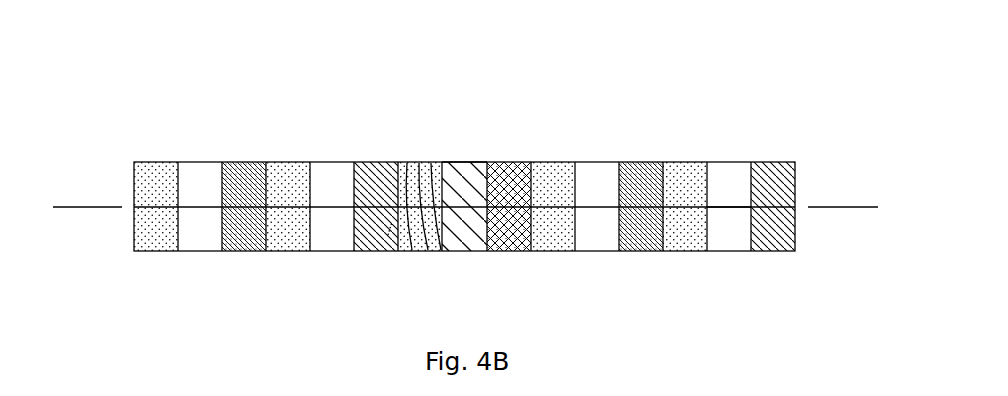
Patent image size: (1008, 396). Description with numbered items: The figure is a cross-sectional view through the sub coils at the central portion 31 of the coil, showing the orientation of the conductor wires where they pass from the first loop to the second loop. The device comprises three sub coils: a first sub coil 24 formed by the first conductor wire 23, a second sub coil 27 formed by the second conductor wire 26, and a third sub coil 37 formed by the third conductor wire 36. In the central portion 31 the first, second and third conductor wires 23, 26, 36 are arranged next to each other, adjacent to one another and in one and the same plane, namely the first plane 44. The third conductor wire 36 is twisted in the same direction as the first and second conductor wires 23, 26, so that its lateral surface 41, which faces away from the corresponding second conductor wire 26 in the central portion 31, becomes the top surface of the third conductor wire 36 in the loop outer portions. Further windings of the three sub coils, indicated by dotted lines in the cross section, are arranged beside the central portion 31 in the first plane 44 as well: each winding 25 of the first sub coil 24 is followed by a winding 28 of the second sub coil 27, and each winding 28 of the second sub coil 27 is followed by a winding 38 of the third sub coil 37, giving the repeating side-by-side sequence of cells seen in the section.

The first plane 44 is at (86, 205).
The central portion 31 is at (440, 101).
The third sub coil 37 is at (400, 150).
The lateral surface of the third conductor wire 41 is at (388, 235).
The third conductor wire 36 is at (424, 158).
The second conductor wire 26 is at (460, 158).
The second sub coil 27 is at (483, 148).
The first conductor wire 23 is at (515, 158).
The first sub coil 24 is at (538, 151).
The winding of the third sub coil 38 is at (688, 172).
The winding of the second sub coil 28 is at (728, 182).
The winding of the first sub coil 25 is at (775, 175).